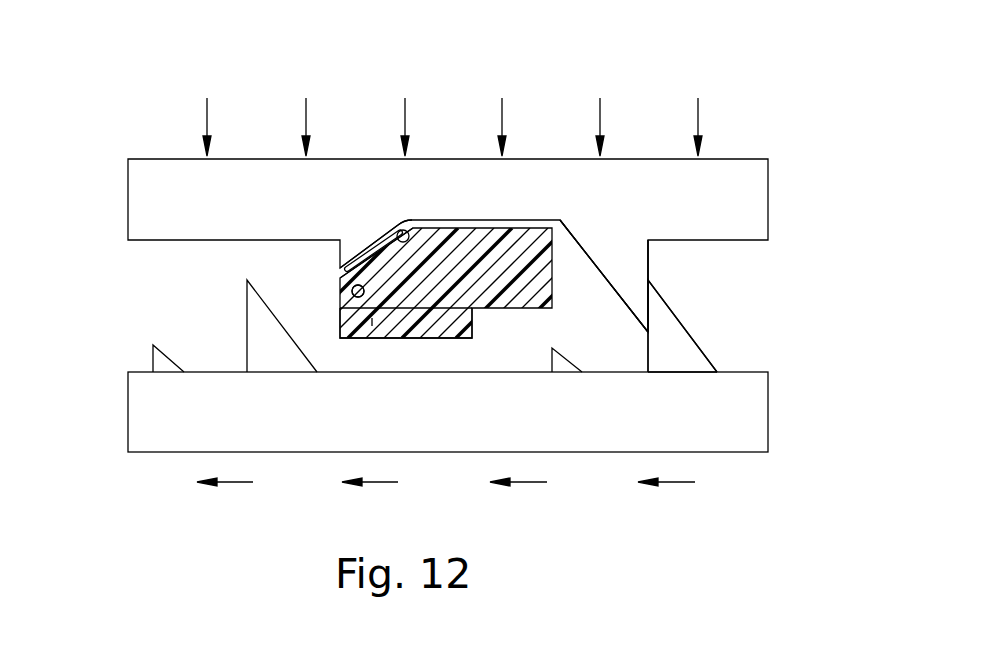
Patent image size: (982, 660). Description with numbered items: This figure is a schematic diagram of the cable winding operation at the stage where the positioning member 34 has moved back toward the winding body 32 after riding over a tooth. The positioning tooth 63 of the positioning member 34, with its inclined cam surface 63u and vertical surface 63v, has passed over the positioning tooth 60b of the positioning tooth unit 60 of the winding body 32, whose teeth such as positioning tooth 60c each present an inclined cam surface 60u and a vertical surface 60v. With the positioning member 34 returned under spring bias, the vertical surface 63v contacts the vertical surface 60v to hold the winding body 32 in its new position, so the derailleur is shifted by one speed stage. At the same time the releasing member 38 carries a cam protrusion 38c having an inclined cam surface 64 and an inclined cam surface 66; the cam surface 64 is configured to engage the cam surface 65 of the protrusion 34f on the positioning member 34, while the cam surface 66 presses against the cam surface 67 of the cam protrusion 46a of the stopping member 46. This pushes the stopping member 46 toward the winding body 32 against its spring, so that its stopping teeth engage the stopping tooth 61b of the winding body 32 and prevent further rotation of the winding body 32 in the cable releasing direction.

The winding body 32 is at (770, 363).
The positioning member 34 is at (532, 150).
The protrusion 34f is at (350, 257).
The releasing member 38 is at (455, 223).
The cam protrusion 38c is at (383, 267).
The stopping member 46 is at (422, 338).
The cam protrusion 46a is at (352, 291).
The positioning tooth unit 60 is at (708, 352).
The positioning tooth 60b is at (700, 378).
The positioning tooth 60c is at (300, 376).
The cam surface 60u is at (720, 311).
The vertical surface 60v is at (648, 358).
The stopping tooth 61b is at (552, 348).
The positioning tooth 63 is at (643, 275).
The cam surface 63u is at (575, 250).
The vertical surface 63v is at (650, 257).
The cam surface 64 is at (380, 252).
The cam surface 65 is at (400, 229).
The cam surface 66 is at (372, 322).
The cam surface 67 is at (357, 298).